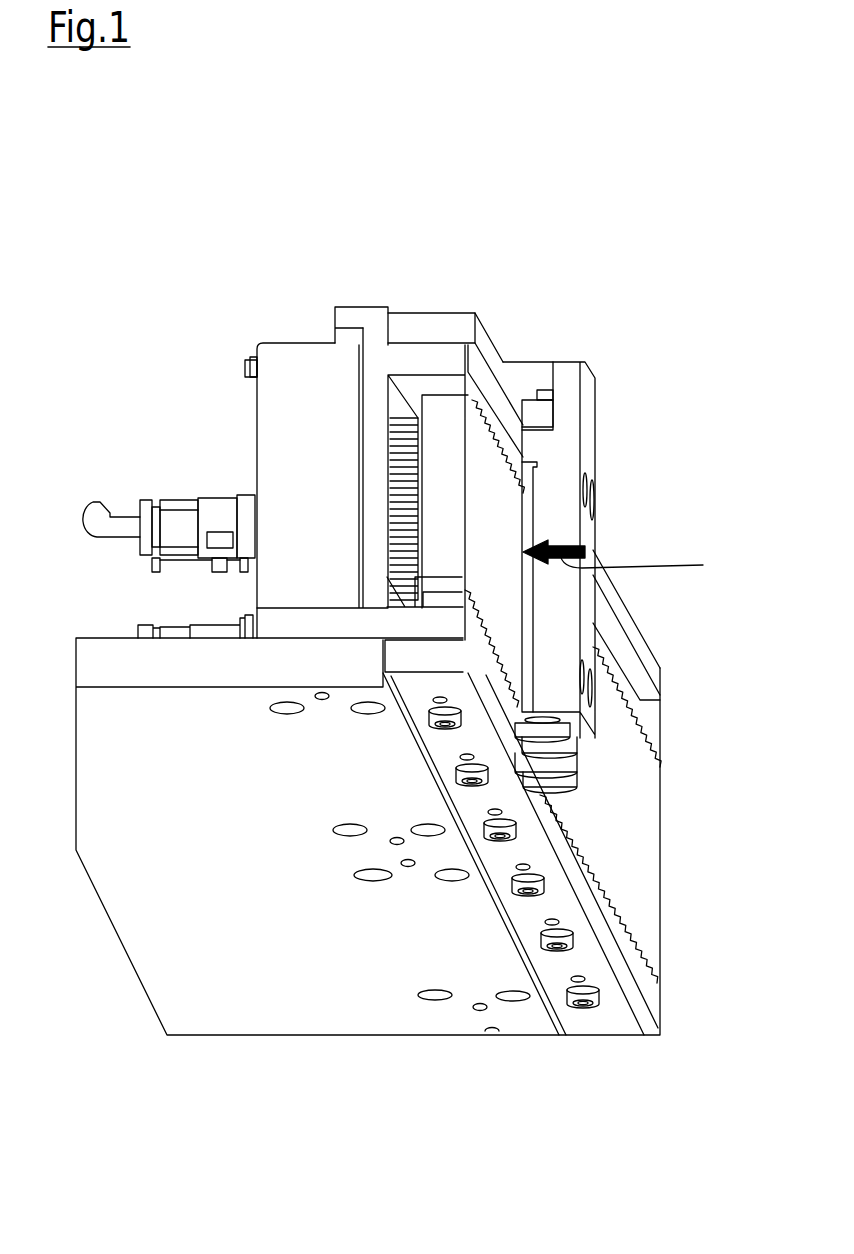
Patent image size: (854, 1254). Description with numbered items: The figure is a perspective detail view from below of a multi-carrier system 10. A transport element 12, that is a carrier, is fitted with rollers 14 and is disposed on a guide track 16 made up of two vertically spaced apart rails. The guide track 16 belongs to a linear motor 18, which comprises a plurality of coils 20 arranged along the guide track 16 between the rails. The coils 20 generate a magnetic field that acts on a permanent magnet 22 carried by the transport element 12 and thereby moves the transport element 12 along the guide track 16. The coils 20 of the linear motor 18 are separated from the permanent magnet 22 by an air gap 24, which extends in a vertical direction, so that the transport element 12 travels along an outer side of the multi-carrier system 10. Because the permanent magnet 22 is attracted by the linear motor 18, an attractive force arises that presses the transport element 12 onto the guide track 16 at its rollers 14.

The multi-carrier system 10 is at (507, 207).
The transport element 12 is at (598, 410).
The rollers 14 is at (538, 408).
The guide track 16 is at (650, 668).
The linear motor 18 is at (282, 342).
The coils 20 is at (442, 423).
The permanent magnet 22 is at (527, 530).
The air gap 24 is at (508, 697).